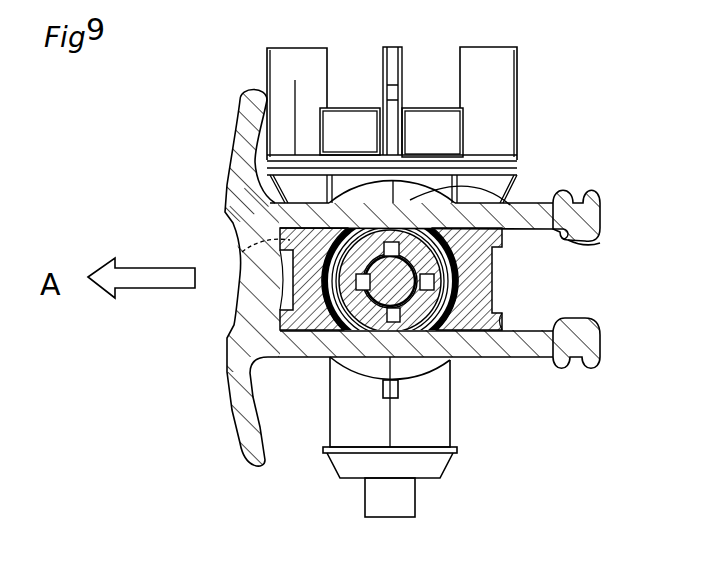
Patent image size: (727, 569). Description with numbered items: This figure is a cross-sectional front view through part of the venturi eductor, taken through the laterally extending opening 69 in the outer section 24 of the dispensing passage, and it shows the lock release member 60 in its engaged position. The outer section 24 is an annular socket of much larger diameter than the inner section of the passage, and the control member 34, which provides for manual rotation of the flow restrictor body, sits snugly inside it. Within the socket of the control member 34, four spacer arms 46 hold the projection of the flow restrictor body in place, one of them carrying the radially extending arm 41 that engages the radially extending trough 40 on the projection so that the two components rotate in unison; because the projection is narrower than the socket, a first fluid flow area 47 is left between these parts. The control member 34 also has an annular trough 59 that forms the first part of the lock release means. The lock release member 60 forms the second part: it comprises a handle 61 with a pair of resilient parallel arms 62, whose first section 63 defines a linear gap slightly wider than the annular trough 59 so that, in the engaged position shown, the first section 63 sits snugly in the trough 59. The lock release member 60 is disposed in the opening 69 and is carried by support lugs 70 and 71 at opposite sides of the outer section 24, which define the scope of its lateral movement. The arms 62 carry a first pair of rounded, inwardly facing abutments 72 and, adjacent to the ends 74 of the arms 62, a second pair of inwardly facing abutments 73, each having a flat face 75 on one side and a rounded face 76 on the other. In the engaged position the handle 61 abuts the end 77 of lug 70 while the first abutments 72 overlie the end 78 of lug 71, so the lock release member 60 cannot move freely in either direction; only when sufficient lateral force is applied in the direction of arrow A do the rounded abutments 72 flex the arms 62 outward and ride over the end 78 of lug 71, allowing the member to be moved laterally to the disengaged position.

The outer section 24 is at (417, 147).
The control member 34 is at (470, 285).
The radially extending trough 40 is at (232, 342).
The radially extending arm 41 is at (236, 313).
The spacer arms 46 is at (383, 388).
The first fluid flow area 47 is at (320, 362).
The annular trough 59 is at (494, 262).
The lock release member 60 is at (240, 115).
The handle 61 is at (228, 226).
The resilient parallel arms 62 is at (293, 190).
The first section 63 is at (322, 187).
The laterally extending opening 69 is at (360, 197).
The support lug 70 is at (265, 212).
The support lug 71 is at (515, 170).
The first pair of inwardly facing abutments 72 is at (492, 314).
The second pair of inwardly facing abutments 73 is at (578, 322).
The ends of the arms 74 is at (603, 212).
The flat face 75 is at (558, 240).
The rounded face 76 is at (590, 242).
The end of lug 77 is at (242, 252).
The end of lug 78 is at (515, 236).